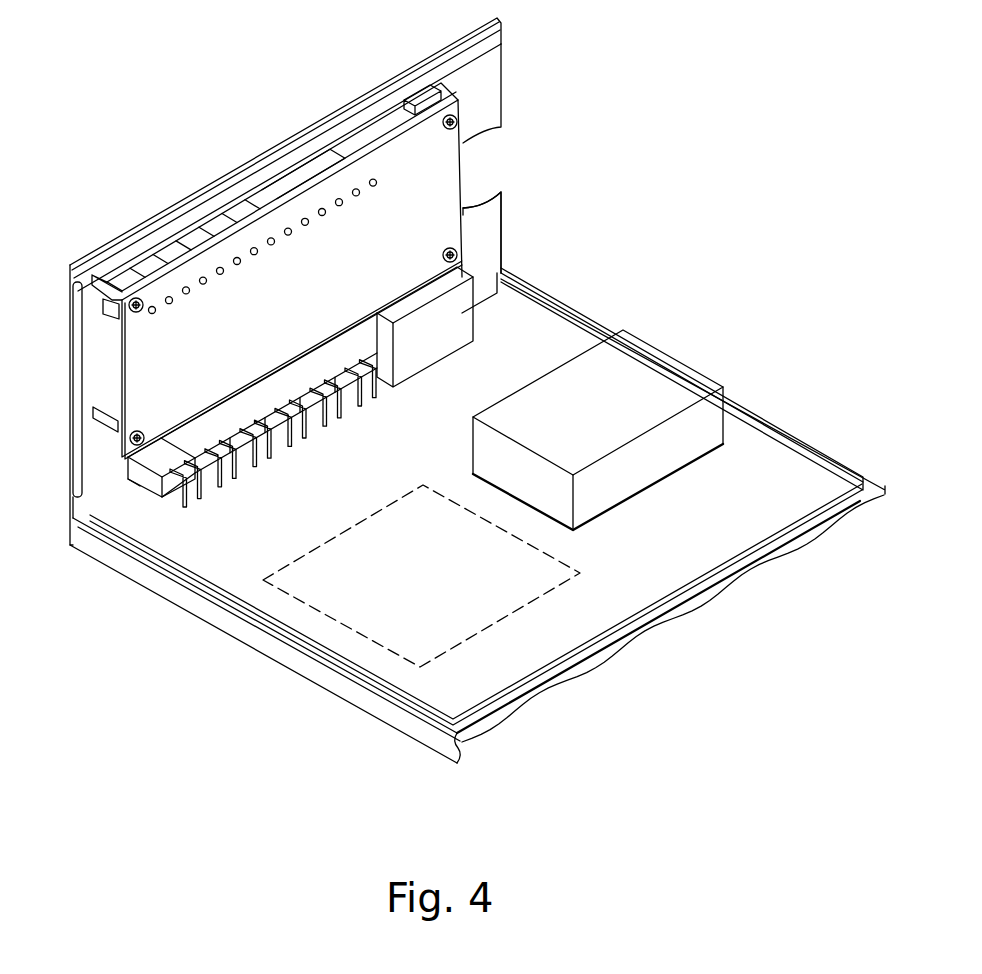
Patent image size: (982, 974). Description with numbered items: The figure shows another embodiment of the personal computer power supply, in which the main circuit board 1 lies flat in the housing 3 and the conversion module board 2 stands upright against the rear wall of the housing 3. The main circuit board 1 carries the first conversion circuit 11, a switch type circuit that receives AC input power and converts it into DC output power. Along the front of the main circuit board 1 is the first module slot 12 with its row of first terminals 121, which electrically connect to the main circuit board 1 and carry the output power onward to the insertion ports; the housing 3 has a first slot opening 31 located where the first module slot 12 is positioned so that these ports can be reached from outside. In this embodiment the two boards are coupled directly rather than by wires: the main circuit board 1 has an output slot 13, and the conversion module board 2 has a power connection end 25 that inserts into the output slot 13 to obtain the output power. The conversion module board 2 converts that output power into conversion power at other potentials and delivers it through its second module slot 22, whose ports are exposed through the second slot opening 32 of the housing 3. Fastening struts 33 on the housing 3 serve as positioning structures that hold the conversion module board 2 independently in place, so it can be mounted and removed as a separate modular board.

The main circuit board 1 is at (520, 670).
The first conversion circuit 11 is at (380, 641).
The first module slot 12 is at (140, 479).
The first terminals 121 is at (190, 506).
The output slot 13 is at (470, 330).
The conversion module board 2 is at (437, 187).
The second module slot 22 is at (183, 247).
The power connection end 25 is at (507, 267).
The housing 3 is at (387, 707).
The first slot opening 31 is at (127, 467).
The second slot opening 32 is at (250, 190).
The fastening struts 33 is at (407, 99).